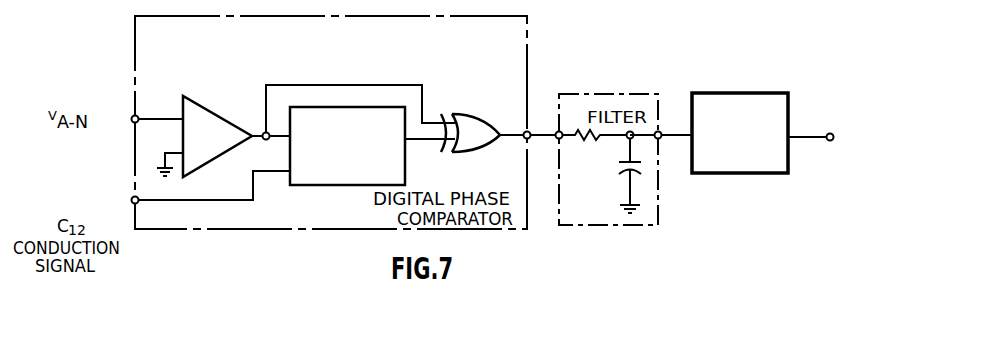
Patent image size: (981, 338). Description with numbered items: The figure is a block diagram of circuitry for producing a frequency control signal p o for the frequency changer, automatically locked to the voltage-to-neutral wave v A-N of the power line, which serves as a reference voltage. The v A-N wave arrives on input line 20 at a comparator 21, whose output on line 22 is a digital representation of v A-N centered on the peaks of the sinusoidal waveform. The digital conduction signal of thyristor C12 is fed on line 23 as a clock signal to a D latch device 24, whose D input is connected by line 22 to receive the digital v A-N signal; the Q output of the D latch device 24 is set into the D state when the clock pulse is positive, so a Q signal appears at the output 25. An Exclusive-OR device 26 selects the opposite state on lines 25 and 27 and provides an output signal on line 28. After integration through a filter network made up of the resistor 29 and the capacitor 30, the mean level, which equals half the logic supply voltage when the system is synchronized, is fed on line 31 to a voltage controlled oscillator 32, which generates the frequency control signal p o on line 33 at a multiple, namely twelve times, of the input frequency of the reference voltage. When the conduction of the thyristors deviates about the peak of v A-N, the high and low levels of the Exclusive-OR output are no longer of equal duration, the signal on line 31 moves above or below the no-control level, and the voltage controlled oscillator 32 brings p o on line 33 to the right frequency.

The input line 20 is at (174, 118).
The comparator 21 is at (242, 124).
The comparator output line 22 is at (254, 139).
The clock signal line 23 is at (197, 204).
The D latch device 24 is at (304, 186).
The Q output line 25 is at (420, 141).
The Exclusive-OR device 26 is at (478, 152).
The Exclusive-OR input line 27 is at (361, 86).
The Exclusive-OR output line 28 is at (513, 131).
The filter network resistor 29 is at (580, 139).
The filter network capacitor 30 is at (626, 172).
The filter output line 31 is at (675, 131).
The voltage controlled oscillator 32 is at (737, 93).
The frequency control signal output line 33 is at (804, 140).